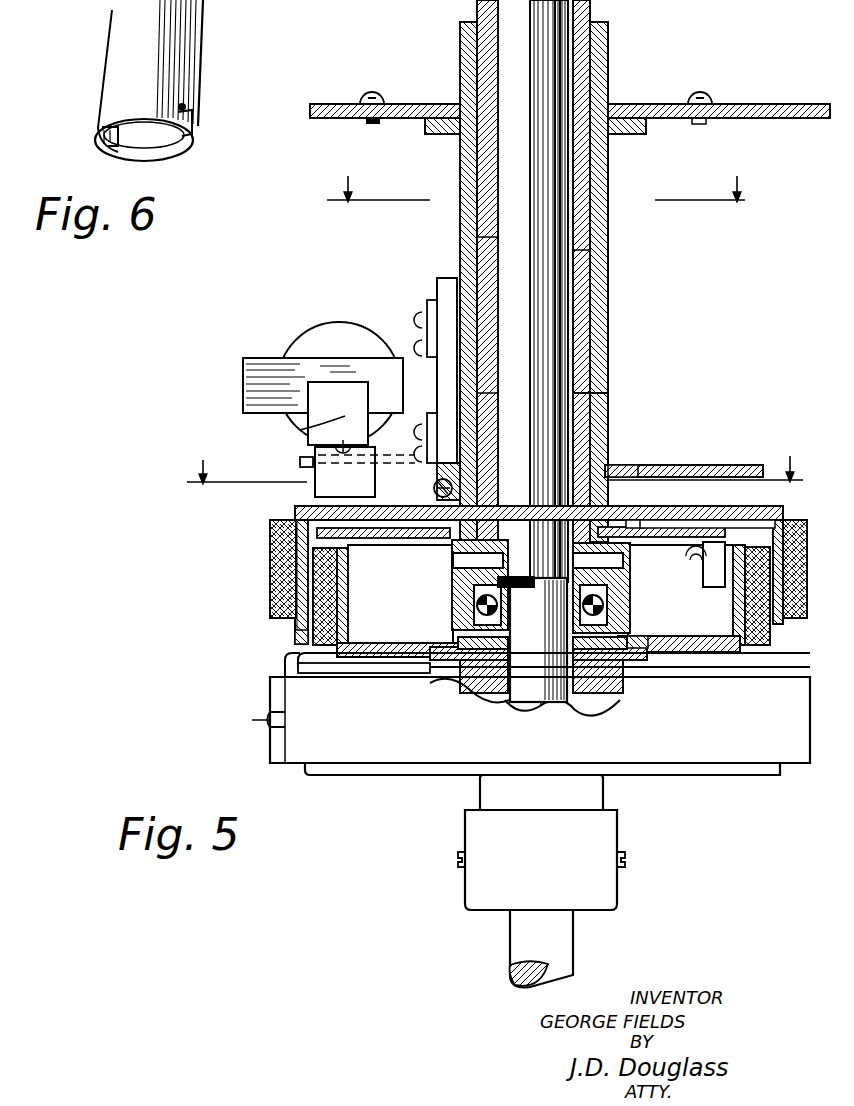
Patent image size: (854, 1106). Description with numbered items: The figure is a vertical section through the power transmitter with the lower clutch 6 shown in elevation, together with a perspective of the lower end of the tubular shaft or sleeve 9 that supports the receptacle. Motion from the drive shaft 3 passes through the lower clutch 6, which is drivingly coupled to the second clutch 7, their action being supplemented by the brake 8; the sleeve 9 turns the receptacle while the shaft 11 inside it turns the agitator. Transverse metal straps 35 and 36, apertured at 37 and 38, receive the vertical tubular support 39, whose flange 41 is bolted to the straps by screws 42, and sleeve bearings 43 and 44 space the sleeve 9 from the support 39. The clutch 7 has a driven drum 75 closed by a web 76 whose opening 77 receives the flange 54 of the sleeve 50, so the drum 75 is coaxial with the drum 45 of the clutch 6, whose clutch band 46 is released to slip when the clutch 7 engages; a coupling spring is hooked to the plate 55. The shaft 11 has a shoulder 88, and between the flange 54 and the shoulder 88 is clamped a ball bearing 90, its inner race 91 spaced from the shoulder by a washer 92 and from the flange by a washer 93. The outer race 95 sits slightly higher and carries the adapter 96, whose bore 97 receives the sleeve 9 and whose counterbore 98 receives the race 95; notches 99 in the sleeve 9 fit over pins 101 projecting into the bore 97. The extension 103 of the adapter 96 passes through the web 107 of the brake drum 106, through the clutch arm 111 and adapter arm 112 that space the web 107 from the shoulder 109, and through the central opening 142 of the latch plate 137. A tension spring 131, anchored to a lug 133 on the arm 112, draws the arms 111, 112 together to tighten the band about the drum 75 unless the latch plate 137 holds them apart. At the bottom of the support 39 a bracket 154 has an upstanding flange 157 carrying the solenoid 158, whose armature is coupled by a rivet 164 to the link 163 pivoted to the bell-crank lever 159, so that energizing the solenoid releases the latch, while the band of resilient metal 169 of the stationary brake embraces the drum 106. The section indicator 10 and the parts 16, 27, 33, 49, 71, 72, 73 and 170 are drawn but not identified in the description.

In FIG. 5, the drive shaft 3 is at (515, 942).
In FIG. 5, the lower clutch 6 is at (270, 757).
In FIG. 5, the second clutch 7 is at (303, 636).
In FIG. 5, the brake 8 is at (268, 580).
In FIG. 6, the tubular shaft or sleeve 9 is at (112, 60).
In FIG. 5, the section line 10 is at (495, 323).
In FIG. 5, the shaft 11 is at (555, 320).
In FIG. 5, the motor 16 is at (612, 890).
In FIG. 5, the motor neck 27 is at (604, 800).
In FIG. 5, the clips 33 is at (630, 858).
In FIG. 5, the metal strap 35 is at (700, 100).
In FIG. 5, the metal strap 36 is at (740, 106).
In FIG. 5, the aperture 37 is at (470, 100).
In FIG. 5, the aperture 38 is at (462, 134).
In FIG. 5, the vertical tubular support 39 is at (600, 216).
In FIG. 5, the flange 41 is at (640, 134).
In FIG. 5, the screws 42 is at (372, 98).
In FIG. 5, the sleeve bearing 43 is at (595, 62).
In FIG. 5, the sleeve bearing 44 is at (595, 290).
In FIG. 5, the drum 45 is at (306, 778).
In FIG. 5, the clutch band 46 is at (278, 663).
In FIG. 5, the collar 49 is at (500, 706).
In FIG. 5, the sleeve 50 is at (522, 705).
In FIG. 5, the flange 54 is at (472, 648).
In FIG. 5, the plate 55 is at (380, 666).
In FIG. 5, the collar 71 is at (562, 700).
In FIG. 5, the collar 72 is at (484, 690).
In FIG. 5, the bearing flange 73 is at (458, 686).
In FIG. 5, the driven member or drum 75 is at (348, 580).
In FIG. 5, the web 76 is at (396, 645).
In FIG. 5, the opening 77 is at (600, 698).
In FIG. 5, the shoulder 88 is at (536, 580).
In FIG. 5, the ball bearing 90 is at (604, 623).
In FIG. 5, the inner race 91 is at (474, 612).
In FIG. 5, the washer 92 is at (470, 600).
In FIG. 5, the washer 93 is at (612, 643).
In FIG. 5, the outer race 95 is at (618, 604).
In FIG. 5, the adapter 96 is at (456, 592).
In FIG. 5, the bore 97 is at (600, 425).
In FIG. 5, the counterbore 98 is at (640, 576).
In FIG. 6, the notches 99 is at (112, 146).
In FIG. 5, the pins 101 is at (452, 562).
In FIG. 5, the extension 103 is at (605, 445).
In FIG. 5, the rotary brake member or drum 106 is at (270, 548).
In FIG. 5, the web 107 is at (330, 512).
In FIG. 5, the shoulder 109 is at (672, 528).
In FIG. 5, the clutch arm 111 is at (630, 520).
In FIG. 5, the adapter arm 112 is at (715, 522).
In FIG. 5, the tension spring 131 is at (712, 578).
In FIG. 5, the lug 133 is at (715, 600).
In FIG. 5, the latch plate 137 is at (435, 502).
In FIG. 5, the central opening 142 is at (618, 478).
In FIG. 5, the bracket 154 is at (703, 466).
In FIG. 5, the upstanding flange 157 is at (440, 300).
In FIG. 5, the solenoid 158 is at (322, 330).
In FIG. 5, the bell-crank lever 159 is at (303, 463).
In FIG. 5, the link 163 is at (320, 420).
In FIG. 5, the rivet 164 is at (330, 490).
In FIG. 5, the band of resilient metal 169 is at (313, 600).
In FIG. 5, the packing 170 is at (320, 620).